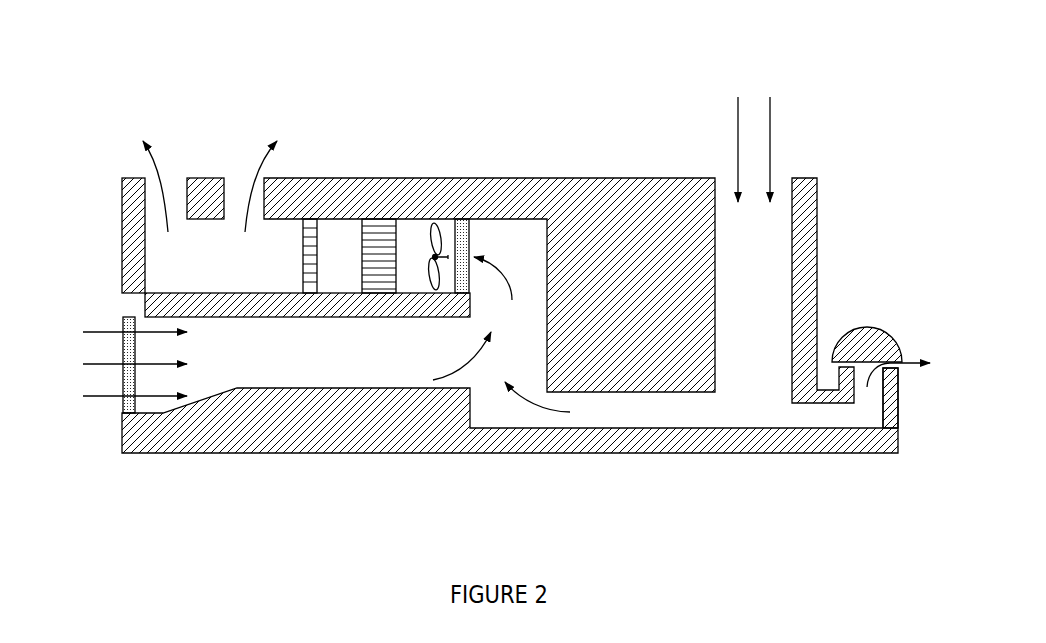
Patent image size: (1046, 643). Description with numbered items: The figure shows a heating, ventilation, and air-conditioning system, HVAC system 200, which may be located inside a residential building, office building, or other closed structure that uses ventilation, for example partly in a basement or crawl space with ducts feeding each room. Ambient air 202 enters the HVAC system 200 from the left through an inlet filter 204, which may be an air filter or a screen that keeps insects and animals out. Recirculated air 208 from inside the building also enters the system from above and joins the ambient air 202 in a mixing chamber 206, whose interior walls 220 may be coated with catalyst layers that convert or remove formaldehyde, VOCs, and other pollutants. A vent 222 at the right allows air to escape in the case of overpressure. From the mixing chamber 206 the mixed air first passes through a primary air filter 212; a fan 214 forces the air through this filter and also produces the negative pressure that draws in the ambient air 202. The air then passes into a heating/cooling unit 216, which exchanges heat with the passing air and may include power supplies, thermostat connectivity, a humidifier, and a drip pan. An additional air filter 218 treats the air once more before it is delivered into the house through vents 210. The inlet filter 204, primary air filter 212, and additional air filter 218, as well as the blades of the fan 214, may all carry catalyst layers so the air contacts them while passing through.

The HVAC system 200 is at (512, 19).
The ambient air 202 is at (103, 331).
The inlet filter 204 is at (123, 403).
The mixing chamber 206 is at (510, 343).
The recirculated air 208 is at (770, 142).
The vents 210 is at (237, 190).
The primary air filter 212 is at (465, 228).
The fan 214 is at (442, 237).
The heating/cooling unit 216 is at (378, 243).
The additional air filter 218 is at (311, 243).
The interior walls 220 is at (547, 270).
The vent 222 is at (905, 360).